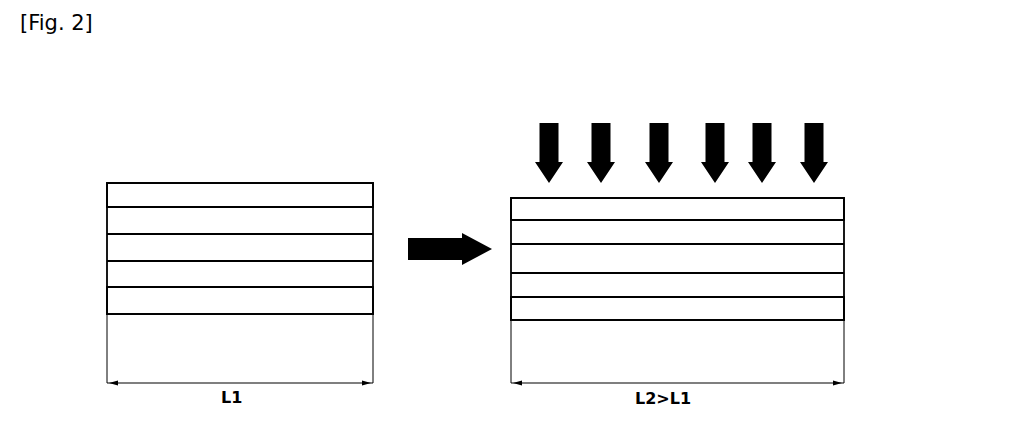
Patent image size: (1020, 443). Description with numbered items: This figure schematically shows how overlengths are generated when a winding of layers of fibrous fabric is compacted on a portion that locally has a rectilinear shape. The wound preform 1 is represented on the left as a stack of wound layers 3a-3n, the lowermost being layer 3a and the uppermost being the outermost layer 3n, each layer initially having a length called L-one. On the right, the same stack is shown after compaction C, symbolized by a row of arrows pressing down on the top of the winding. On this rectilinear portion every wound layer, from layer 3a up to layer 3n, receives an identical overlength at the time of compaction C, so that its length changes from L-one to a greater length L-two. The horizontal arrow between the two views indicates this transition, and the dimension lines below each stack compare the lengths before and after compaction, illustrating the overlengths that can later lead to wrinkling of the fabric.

The wound preform 1 is at (117, 149).
The outermost layer 3n is at (107, 190).
The innermost wound layer 3a is at (124, 305).
The compaction C is at (660, 121).